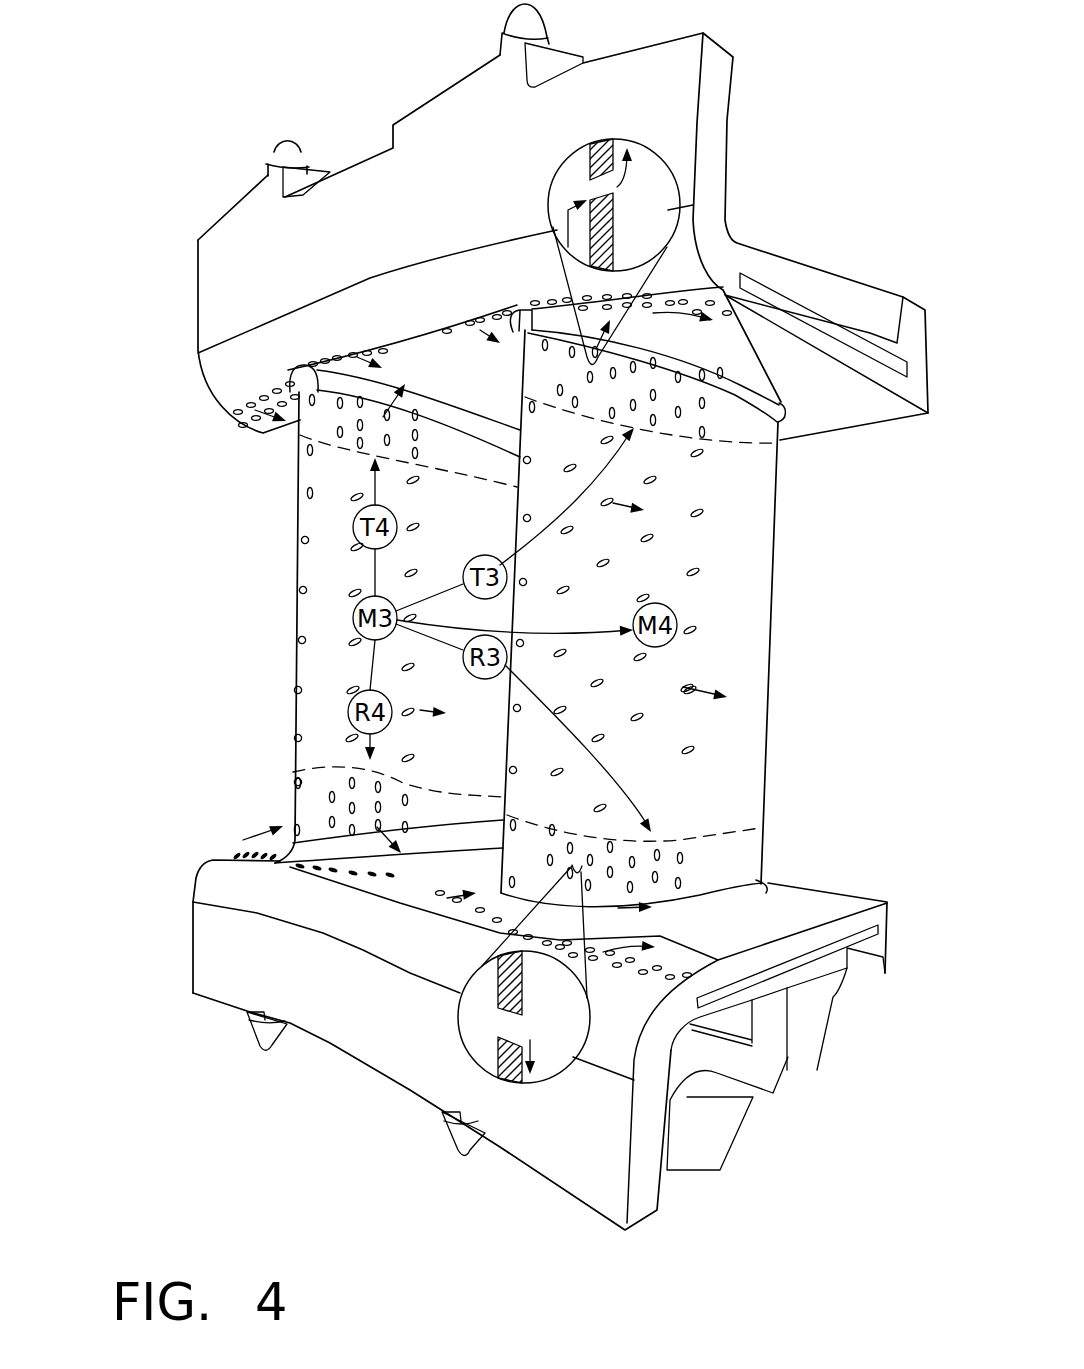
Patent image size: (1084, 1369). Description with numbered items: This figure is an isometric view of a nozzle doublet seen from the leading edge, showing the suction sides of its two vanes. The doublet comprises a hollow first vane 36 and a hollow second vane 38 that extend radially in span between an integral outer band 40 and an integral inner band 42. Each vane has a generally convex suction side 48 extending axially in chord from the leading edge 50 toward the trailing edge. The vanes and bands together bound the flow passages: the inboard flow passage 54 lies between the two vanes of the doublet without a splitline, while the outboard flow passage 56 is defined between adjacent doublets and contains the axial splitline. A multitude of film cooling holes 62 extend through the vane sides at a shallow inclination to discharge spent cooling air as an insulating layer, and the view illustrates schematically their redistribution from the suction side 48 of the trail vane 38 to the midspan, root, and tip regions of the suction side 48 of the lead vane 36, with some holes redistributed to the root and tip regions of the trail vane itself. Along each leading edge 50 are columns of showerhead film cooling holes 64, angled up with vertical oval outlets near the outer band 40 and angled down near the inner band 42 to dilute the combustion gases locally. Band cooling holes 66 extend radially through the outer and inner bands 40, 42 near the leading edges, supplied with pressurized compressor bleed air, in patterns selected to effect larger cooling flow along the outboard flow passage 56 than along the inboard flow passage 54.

The first vane 36 is at (775, 620).
The second vane 38 is at (290, 690).
The outer band 40 is at (198, 397).
The inner band 42 is at (205, 858).
The suction side 48 is at (472, 758).
The leading edge 50 is at (298, 570).
The inboard flow passage 54 is at (514, 387).
The outboard flow passage 56 is at (266, 647).
The film cooling holes 62 is at (620, 187).
The showerhead film cooling holes 64 is at (298, 737).
The band cooling holes 66 is at (260, 383).